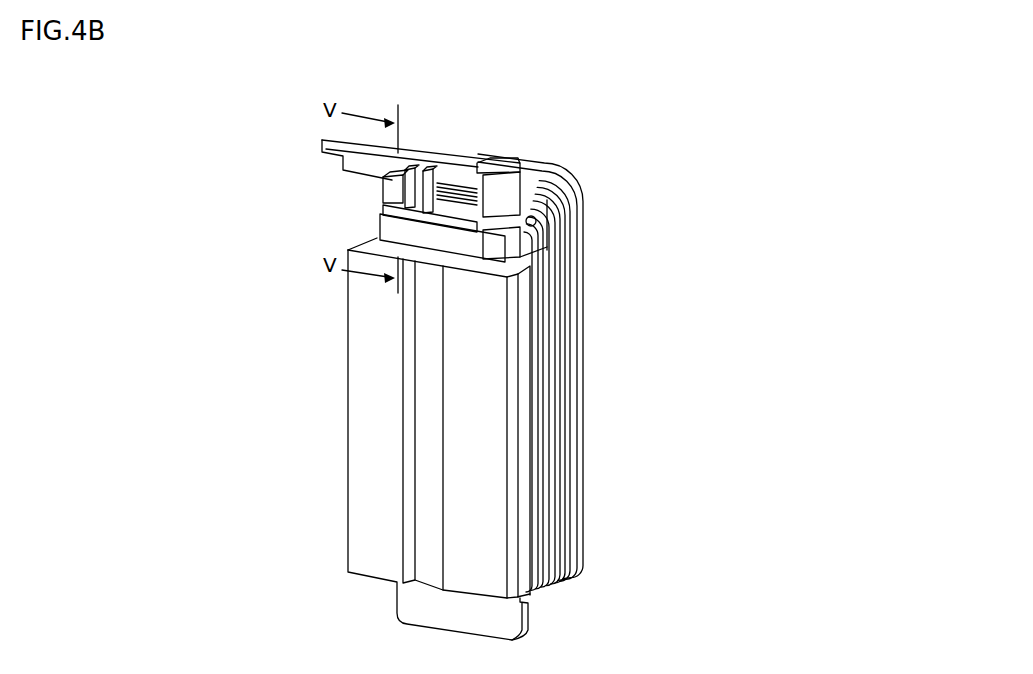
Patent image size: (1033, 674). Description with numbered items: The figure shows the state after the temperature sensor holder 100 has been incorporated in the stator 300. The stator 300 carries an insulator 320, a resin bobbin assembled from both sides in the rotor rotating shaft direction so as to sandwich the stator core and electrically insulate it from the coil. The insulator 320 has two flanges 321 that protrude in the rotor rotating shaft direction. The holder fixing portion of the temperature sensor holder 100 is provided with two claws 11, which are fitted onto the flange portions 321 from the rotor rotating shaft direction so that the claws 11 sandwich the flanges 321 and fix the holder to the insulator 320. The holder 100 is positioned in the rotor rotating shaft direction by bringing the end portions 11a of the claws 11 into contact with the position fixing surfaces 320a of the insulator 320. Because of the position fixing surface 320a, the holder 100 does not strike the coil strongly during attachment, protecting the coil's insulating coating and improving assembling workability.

The temperature sensor holder 100 is at (540, 132).
The stator 300 is at (800, 249).
The insulator 320 is at (673, 236).
The position fixing surface 320a is at (380, 199).
The flange portion 321 is at (419, 196).
The claw 11 is at (380, 187).
The end portion 11a is at (380, 215).